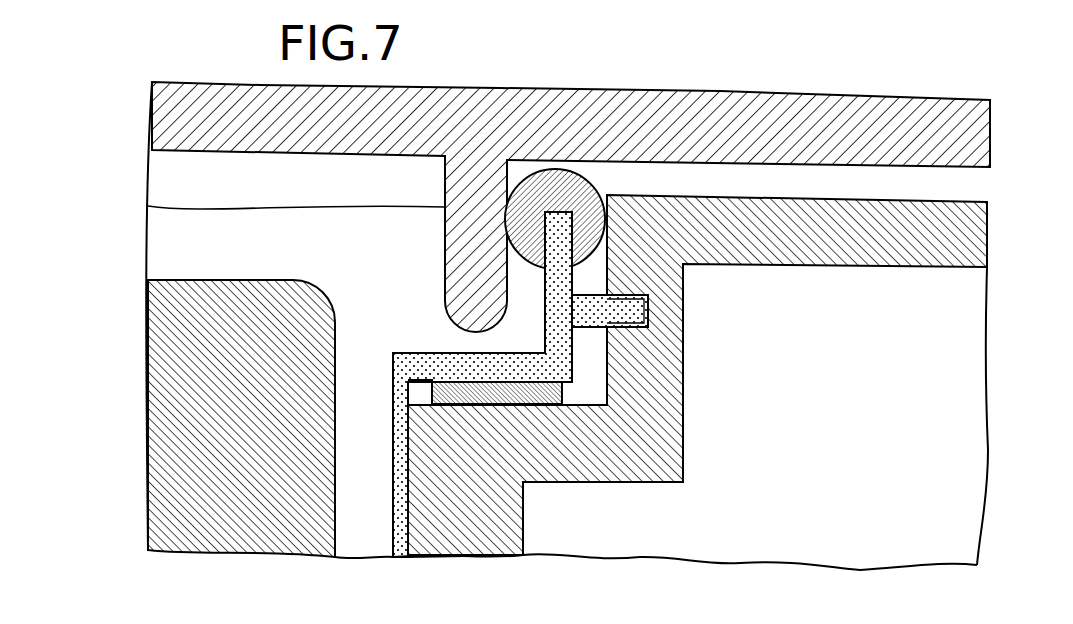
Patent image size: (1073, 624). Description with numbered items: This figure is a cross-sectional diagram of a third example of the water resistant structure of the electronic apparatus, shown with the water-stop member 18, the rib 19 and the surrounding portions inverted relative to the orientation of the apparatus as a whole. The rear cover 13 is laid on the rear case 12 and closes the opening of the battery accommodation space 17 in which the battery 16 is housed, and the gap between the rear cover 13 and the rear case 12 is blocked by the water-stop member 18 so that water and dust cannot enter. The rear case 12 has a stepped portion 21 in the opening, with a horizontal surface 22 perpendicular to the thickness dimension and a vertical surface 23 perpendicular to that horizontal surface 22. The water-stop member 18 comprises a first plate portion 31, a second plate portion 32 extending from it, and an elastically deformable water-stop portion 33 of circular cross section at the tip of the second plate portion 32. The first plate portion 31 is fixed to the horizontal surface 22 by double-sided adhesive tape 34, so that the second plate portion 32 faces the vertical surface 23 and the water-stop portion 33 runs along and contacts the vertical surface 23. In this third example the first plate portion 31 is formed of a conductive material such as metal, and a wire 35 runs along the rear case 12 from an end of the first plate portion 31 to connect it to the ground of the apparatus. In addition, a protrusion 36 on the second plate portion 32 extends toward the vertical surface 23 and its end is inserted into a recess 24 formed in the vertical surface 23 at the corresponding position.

The rear case 12 is at (966, 232).
The rear cover 13 is at (160, 113).
The battery 16 is at (157, 436).
The battery accommodation space 17 is at (368, 538).
The water-stop member 18 is at (597, 177).
The rib 19 is at (148, 206).
The stepped portion 21 is at (683, 463).
The horizontal surface 22 is at (418, 403).
The vertical surface 23 is at (607, 405).
The recess 24 is at (648, 309).
The first plate portion 31 is at (410, 365).
The second plate portion 32 is at (552, 348).
The water-stop portion 33 is at (558, 168).
The double-sided adhesive tape 34 is at (472, 392).
The wire 35 is at (398, 480).
The protrusion 36 is at (612, 307).